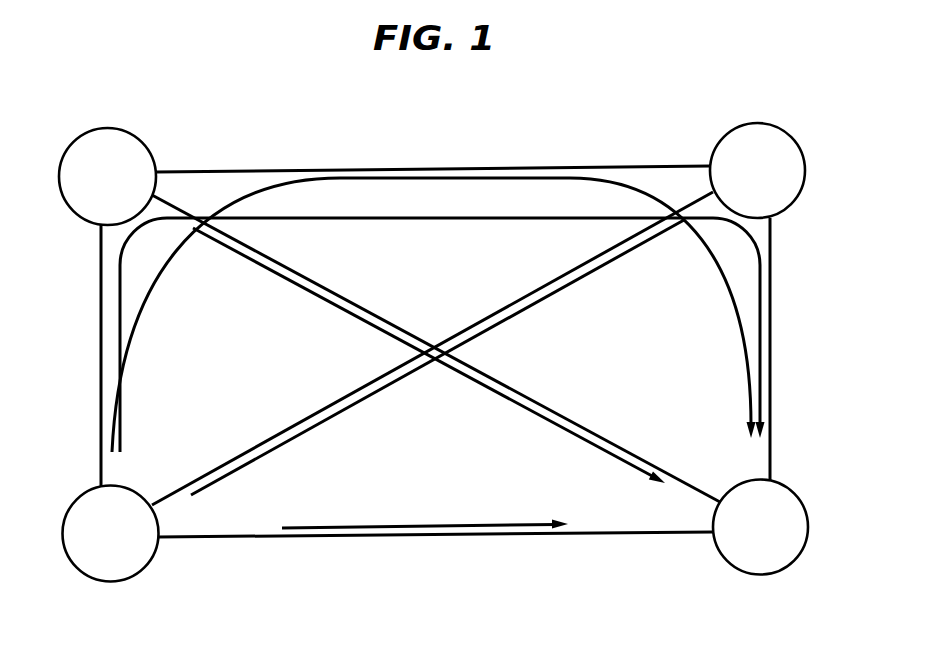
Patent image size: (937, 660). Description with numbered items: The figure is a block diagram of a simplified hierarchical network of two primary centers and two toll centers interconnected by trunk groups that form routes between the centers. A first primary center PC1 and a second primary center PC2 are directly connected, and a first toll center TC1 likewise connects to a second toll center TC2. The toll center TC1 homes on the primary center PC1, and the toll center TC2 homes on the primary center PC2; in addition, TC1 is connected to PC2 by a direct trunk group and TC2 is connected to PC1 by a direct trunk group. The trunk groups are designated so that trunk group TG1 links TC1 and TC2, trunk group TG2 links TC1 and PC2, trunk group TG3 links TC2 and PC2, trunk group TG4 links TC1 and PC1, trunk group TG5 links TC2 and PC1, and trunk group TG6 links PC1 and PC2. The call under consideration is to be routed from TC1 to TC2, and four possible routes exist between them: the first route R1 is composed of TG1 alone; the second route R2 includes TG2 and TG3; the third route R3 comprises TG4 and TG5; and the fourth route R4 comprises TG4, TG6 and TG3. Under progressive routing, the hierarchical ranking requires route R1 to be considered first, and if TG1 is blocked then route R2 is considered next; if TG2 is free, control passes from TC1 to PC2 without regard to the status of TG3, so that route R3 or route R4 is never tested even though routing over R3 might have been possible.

The first primary center PC1 is at (107, 176).
The second primary center PC2 is at (757, 170).
The first toll center TC1 is at (111, 534).
The second toll center TC2 is at (760, 527).
The trunk group TG1 is at (435, 551).
The trunk group TG2 is at (432, 348).
The trunk group TG3 is at (790, 349).
The trunk group TG4 is at (78, 355).
The trunk group TG5 is at (436, 348).
The trunk group TG6 is at (433, 155).
The first route R1 is at (441, 520).
The second route R2 is at (442, 347).
The third route R3 is at (438, 370).
The fourth route R4 is at (434, 315).